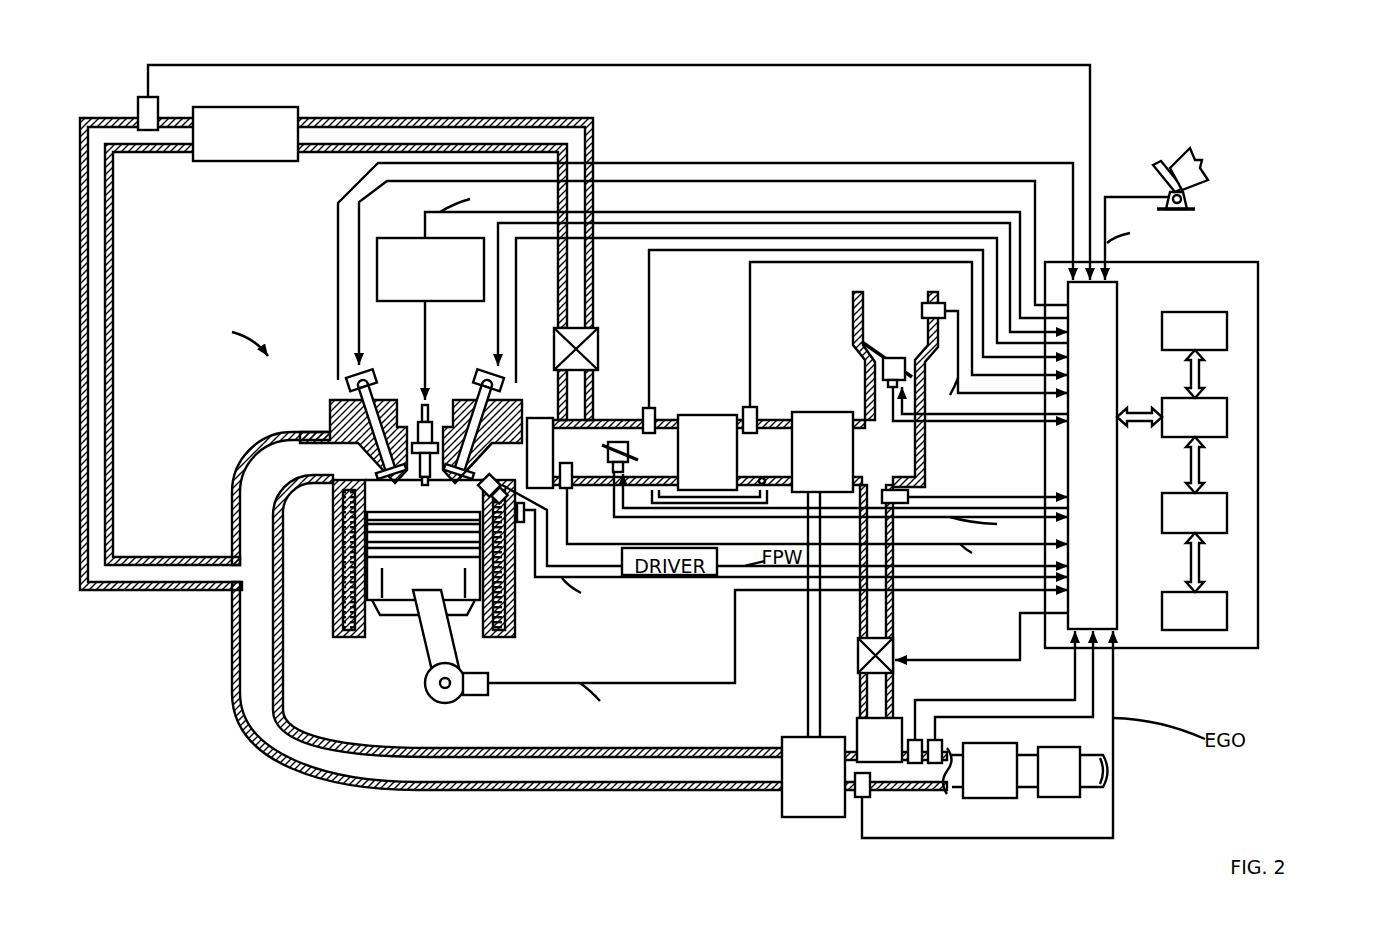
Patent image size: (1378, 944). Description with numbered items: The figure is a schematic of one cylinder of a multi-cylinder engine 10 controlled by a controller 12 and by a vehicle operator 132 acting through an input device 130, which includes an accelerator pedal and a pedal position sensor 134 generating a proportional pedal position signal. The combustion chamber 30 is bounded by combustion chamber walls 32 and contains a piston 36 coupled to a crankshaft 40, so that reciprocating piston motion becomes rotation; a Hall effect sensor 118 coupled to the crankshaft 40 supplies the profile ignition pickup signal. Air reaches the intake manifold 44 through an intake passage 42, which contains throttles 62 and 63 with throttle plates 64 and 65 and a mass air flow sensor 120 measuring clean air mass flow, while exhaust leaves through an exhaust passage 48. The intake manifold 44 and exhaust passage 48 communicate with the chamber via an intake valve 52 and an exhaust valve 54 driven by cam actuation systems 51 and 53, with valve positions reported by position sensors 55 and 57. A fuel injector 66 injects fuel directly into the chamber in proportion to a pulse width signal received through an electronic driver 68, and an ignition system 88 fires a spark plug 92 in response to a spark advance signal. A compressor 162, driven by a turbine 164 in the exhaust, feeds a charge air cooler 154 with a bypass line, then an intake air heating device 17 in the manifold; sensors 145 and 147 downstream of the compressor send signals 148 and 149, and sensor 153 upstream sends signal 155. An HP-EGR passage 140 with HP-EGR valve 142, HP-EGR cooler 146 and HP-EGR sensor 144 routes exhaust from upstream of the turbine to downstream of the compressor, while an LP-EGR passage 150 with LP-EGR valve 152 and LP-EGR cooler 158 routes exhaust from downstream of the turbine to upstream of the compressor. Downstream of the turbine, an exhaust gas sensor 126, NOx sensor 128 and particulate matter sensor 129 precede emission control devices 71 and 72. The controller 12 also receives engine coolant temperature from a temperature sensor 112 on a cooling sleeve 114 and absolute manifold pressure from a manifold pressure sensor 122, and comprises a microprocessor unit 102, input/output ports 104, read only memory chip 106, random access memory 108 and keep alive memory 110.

The engine 10 is at (235, 336).
The controller 12 is at (1250, 262).
The intake air heating device 17 is at (540, 453).
The combustion chamber 30 is at (400, 495).
The combustion chamber walls 32 is at (370, 640).
The piston 36 is at (400, 600).
The crankshaft 40 is at (432, 700).
The intake passage 42 is at (895, 389).
The intake manifold 44 is at (709, 452).
The exhaust passage 48 is at (507, 611).
The cam actuation system 51 is at (480, 372).
The intake valve 52 is at (458, 474).
The cam actuation system 53 is at (372, 373).
The exhaust valve 54 is at (338, 432).
The position sensor 55 is at (510, 390).
The position sensor 57 is at (350, 390).
The throttle 62 is at (614, 440).
The throttle 63 is at (865, 342).
The throttle plate 64 is at (635, 455).
The throttle plate 65 is at (883, 366).
The fuel injector 66 is at (505, 497).
The electronic driver 68 is at (622, 551).
The emission control device 71 is at (990, 770).
The emission control device 72 is at (1059, 772).
The ignition system 88 is at (388, 238).
The spark plug 92 is at (430, 410).
The microprocessor unit 102 is at (1227, 412).
The input/output ports 104 is at (1120, 290).
The read only memory chip 106 is at (1227, 320).
The random access memory 108 is at (1227, 508).
The keep alive memory 110 is at (1227, 605).
The temperature sensor 112 is at (522, 523).
The cooling sleeve 114 is at (502, 615).
The Hall effect sensor 118 is at (478, 696).
The mass air flow sensor 120 is at (925, 303).
The manifold pressure sensor 122 is at (567, 488).
The exhaust gas sensor 126 is at (870, 797).
The NOx sensor 128 is at (915, 765).
The particulate matter sensor 129 is at (942, 745).
The input device 130 is at (1165, 172).
The vehicle operator 132 is at (1205, 165).
The pedal position sensor 134 is at (1195, 209).
The HP-EGR passage 140 is at (505, 118).
The HP-EGR valve 142 is at (598, 352).
The HP-EGR sensor 144 is at (138, 95).
The sensor 145 is at (757, 407).
The HP-EGR cooler 146 is at (245, 134).
The sensor 147 is at (655, 408).
The signal 148 is at (750, 322).
The signal 149 is at (649, 322).
The LP-EGR passage 150 is at (895, 600).
The LP-EGR valve 152 is at (858, 660).
The sensor 153 is at (888, 490).
The charge air cooler 154 is at (709, 459).
The signal 155 is at (950, 497).
The LP-EGR cooler 158 is at (879, 740).
The compressor 162 is at (822, 574).
The turbine 164 is at (813, 777).